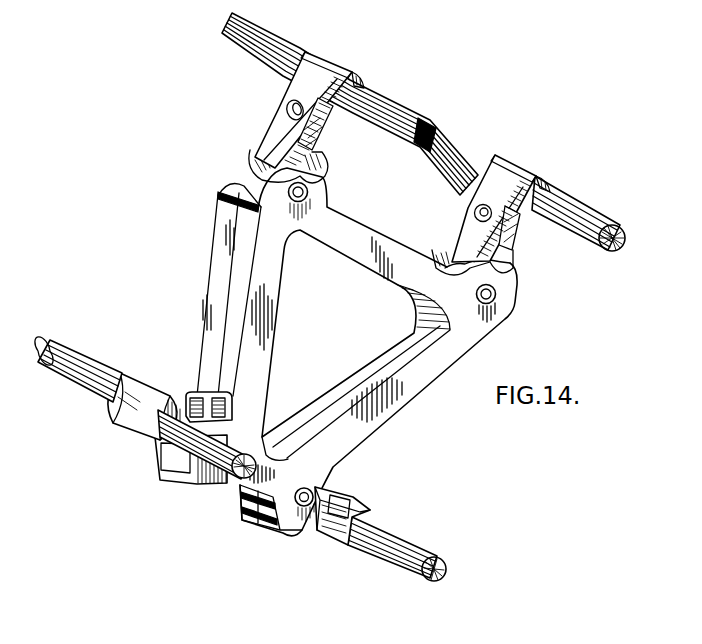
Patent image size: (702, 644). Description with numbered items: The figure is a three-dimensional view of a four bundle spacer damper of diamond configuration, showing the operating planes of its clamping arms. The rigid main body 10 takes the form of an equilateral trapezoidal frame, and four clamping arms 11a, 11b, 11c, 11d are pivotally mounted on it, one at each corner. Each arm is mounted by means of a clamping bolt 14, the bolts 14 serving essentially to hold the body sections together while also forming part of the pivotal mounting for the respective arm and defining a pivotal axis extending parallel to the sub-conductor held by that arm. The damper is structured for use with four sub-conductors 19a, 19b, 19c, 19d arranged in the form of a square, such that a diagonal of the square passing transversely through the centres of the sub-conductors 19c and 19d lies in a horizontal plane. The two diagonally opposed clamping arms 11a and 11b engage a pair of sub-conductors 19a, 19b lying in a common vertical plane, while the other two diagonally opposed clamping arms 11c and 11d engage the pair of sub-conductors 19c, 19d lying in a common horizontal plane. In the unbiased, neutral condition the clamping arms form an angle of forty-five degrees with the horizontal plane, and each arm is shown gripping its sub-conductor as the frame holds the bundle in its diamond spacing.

The main body 10 is at (456, 344).
The clamping arm 11a is at (347, 70).
The clamping arm 11b is at (365, 505).
The clamping arm 11c is at (157, 384).
The clamping arm 11d is at (540, 171).
The clamping bolt 14 is at (308, 192).
The sub-conductor 19a is at (262, 57).
The sub-conductor 19b is at (438, 557).
The sub-conductor 19c is at (84, 388).
The sub-conductor 19d is at (603, 222).